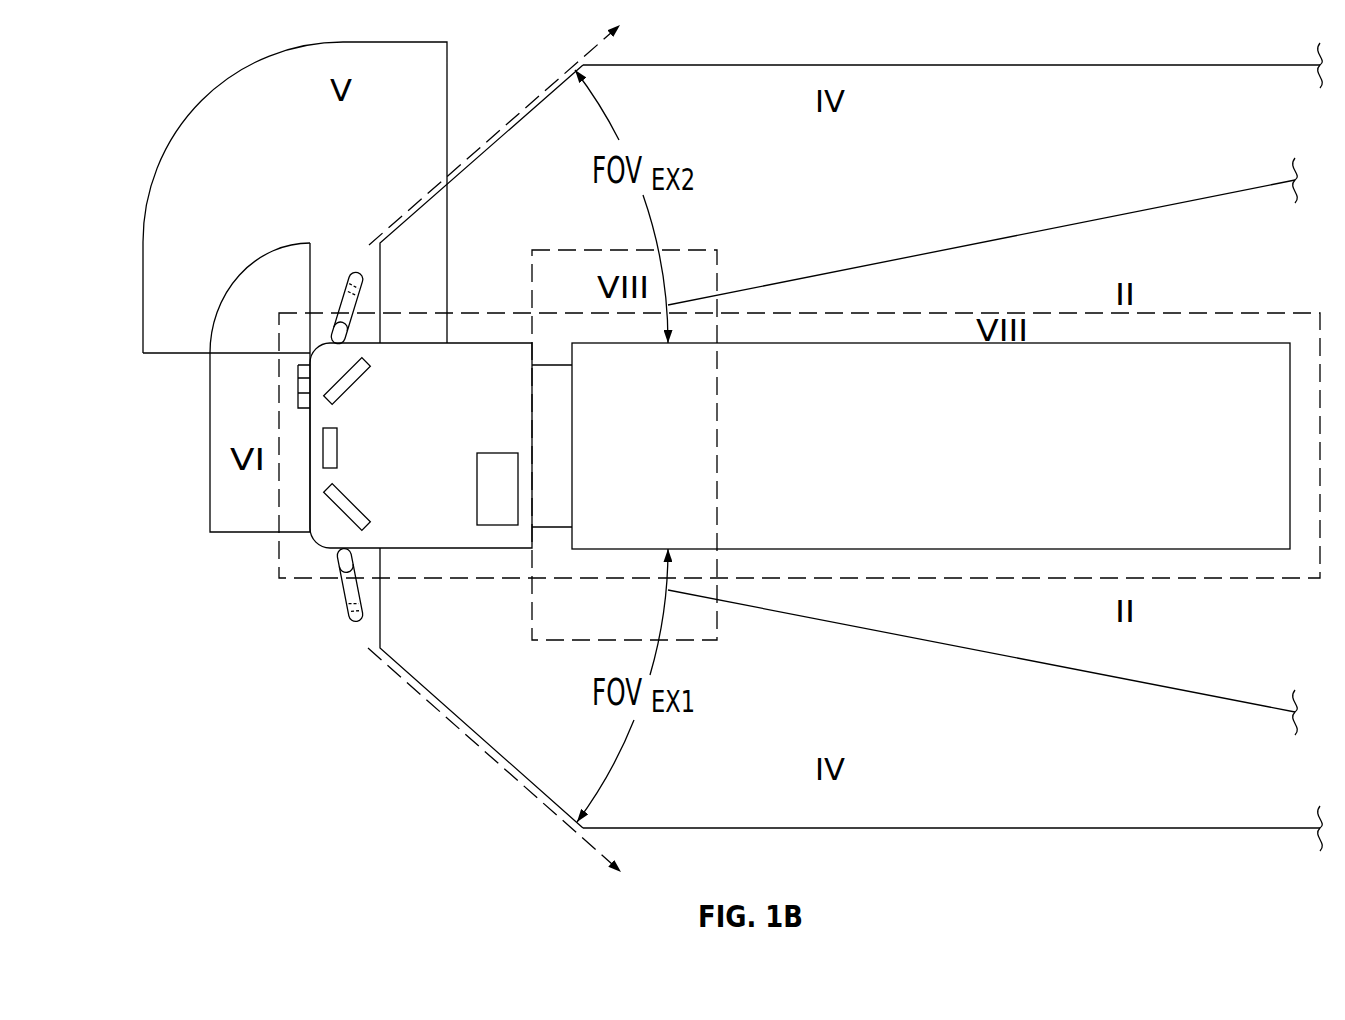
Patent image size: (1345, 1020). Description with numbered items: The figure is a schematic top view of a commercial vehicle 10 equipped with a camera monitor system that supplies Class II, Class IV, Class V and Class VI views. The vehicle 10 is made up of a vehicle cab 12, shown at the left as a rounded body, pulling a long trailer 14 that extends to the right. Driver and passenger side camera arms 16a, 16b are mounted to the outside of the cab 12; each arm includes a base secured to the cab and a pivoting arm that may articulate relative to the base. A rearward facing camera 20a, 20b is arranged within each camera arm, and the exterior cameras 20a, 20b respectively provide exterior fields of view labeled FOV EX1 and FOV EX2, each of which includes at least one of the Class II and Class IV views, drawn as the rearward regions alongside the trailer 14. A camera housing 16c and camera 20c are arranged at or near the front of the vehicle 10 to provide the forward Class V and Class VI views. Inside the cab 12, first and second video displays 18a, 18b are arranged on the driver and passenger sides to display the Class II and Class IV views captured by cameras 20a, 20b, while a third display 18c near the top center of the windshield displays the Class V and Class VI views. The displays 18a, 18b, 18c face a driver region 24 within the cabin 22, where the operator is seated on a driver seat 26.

The commercial vehicle 10 is at (284, 342).
The vehicle cab 12 is at (306, 537).
The trailer 14 is at (1257, 340).
The driver side camera arm 16a is at (347, 588).
The passenger side camera arm 16b is at (353, 273).
The camera housing 16c is at (297, 397).
The first video display 18a is at (358, 503).
The second video display 18b is at (358, 388).
The third display 18c is at (322, 455).
The rearward facing camera 20a is at (362, 604).
The rearward facing camera 20b is at (363, 287).
The front camera 20c is at (297, 372).
The cabin 22 is at (466, 362).
The driver region 24 is at (467, 464).
The driver seat 26 is at (497, 463).